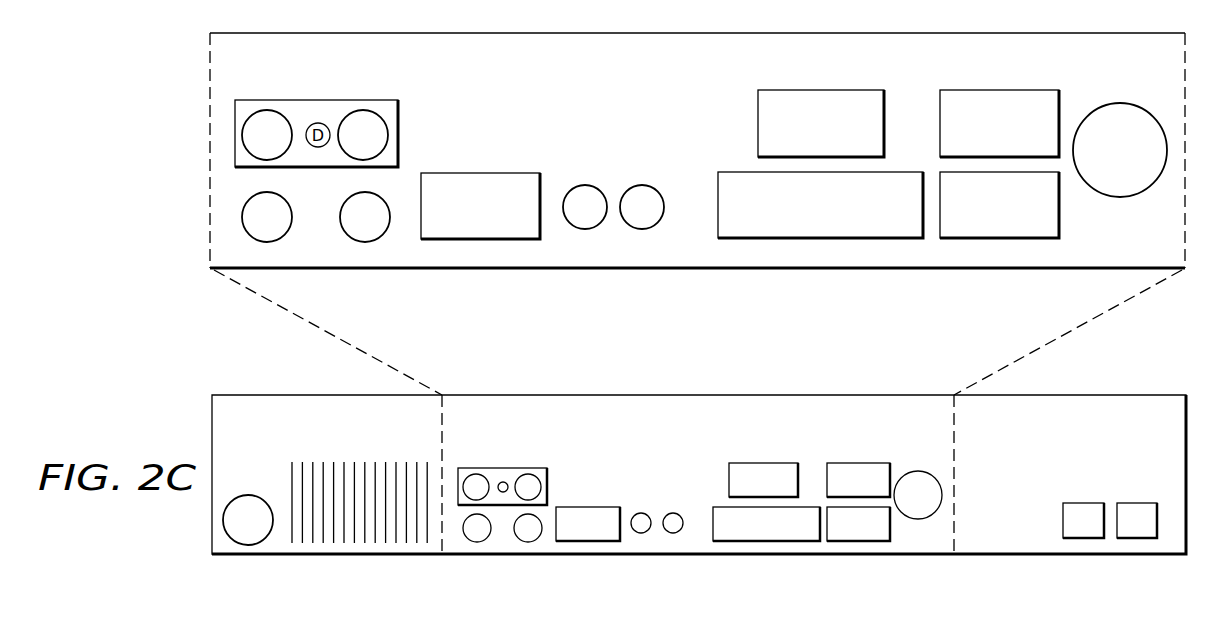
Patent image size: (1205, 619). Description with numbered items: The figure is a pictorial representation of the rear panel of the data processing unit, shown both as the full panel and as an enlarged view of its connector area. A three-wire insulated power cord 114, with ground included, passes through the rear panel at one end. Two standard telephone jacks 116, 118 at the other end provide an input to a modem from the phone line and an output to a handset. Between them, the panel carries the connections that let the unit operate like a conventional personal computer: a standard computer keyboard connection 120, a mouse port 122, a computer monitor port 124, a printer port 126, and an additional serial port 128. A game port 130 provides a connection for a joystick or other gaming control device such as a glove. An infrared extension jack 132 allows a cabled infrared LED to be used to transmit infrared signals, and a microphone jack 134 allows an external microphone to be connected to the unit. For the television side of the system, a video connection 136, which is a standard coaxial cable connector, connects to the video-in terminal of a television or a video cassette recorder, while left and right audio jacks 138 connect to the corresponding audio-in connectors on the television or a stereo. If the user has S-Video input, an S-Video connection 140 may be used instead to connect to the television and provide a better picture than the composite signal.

The power cord 114 is at (252, 495).
The telephone jack 116 is at (1083, 503).
The telephone jack 118 is at (1138, 503).
The computer keyboard connection 120 is at (1119, 103).
The mouse port 122 is at (1000, 90).
The computer monitor port 124 is at (820, 90).
The printer port 126 is at (730, 172).
The serial port 128 is at (1060, 218).
The game port 130 is at (478, 173).
The infrared extension jack 132 is at (585, 185).
The microphone jack 134 is at (641, 185).
The video connection 136 is at (364, 110).
The left and right audio jacks 138 is at (268, 110).
The S-Video connection 140 is at (347, 235).